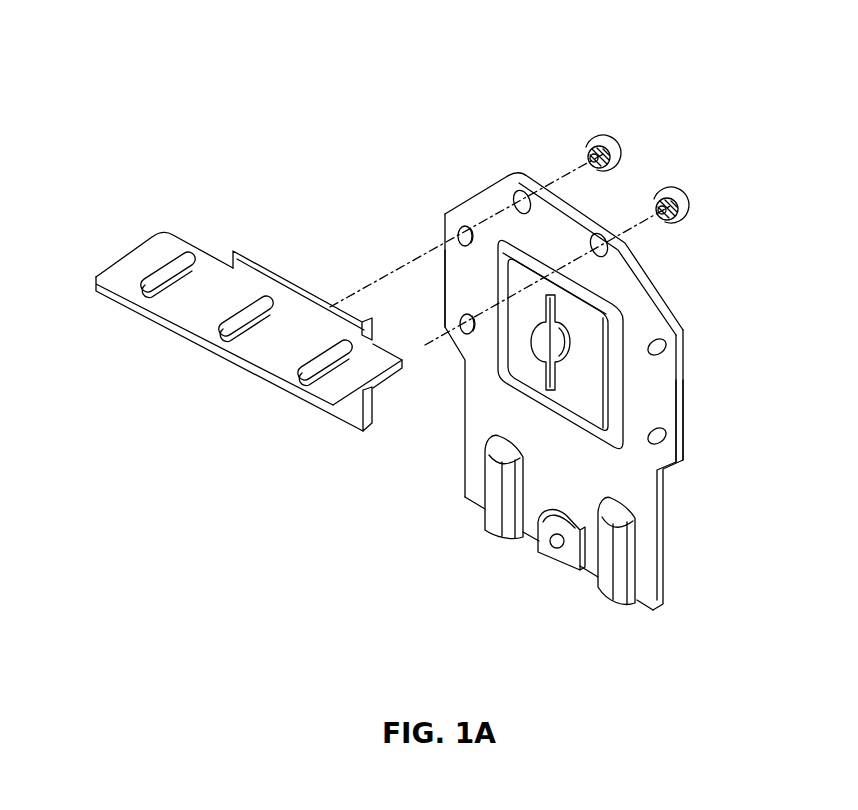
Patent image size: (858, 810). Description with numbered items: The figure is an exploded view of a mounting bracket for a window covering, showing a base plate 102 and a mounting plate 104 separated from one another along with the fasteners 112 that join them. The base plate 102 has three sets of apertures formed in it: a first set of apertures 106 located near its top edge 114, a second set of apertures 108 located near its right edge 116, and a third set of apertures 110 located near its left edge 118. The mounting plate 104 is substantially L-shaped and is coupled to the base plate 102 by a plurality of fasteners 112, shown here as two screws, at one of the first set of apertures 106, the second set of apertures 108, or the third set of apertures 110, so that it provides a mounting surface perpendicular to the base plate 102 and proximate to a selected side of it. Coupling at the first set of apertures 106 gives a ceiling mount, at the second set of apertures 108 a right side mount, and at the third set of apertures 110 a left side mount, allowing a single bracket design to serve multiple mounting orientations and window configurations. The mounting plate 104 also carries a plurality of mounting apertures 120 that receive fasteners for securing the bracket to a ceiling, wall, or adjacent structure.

The base plate 102 is at (551, 322).
The mounting plate 104 is at (203, 232).
The first set of apertures 106 is at (538, 200).
The second set of apertures 108 is at (665, 348).
The third set of apertures 110 is at (455, 320).
The fasteners 112 is at (628, 131).
The top edge 114 is at (513, 200).
The right edge 116 is at (673, 410).
The left edge 118 is at (447, 303).
The mounting apertures 120 is at (312, 376).